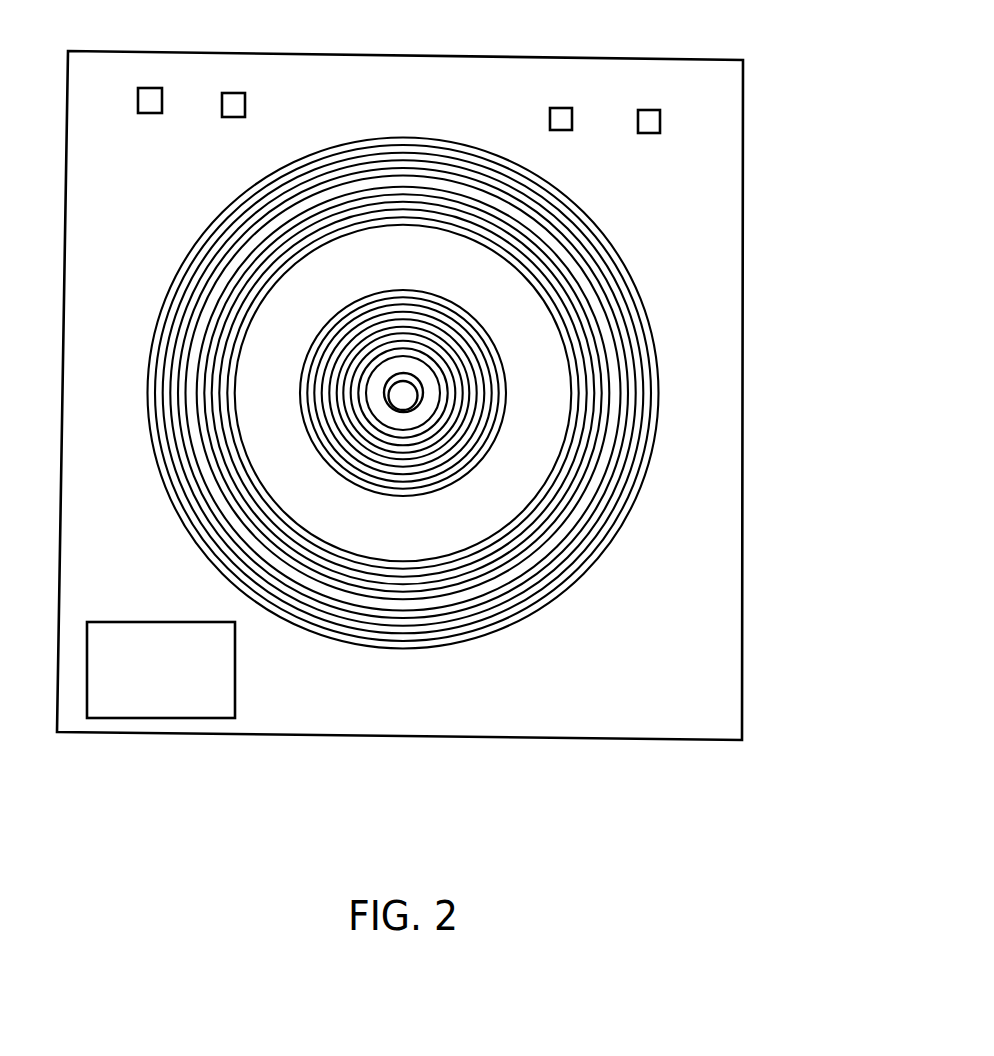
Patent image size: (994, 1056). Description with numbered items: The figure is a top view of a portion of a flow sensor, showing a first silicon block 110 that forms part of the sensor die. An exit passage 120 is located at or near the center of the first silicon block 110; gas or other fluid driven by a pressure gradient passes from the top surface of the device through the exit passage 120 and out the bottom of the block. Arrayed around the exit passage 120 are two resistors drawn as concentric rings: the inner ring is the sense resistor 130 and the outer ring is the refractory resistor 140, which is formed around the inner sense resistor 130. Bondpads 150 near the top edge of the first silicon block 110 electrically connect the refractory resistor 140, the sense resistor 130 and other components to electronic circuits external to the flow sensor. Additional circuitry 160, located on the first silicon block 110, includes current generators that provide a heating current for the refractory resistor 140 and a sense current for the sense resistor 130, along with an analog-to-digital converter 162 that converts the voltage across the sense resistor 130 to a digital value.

The first silicon block 110 is at (683, 372).
The exit passage 120 is at (402, 408).
The sense resistor 130 is at (485, 357).
The refractory resistor 140 is at (615, 475).
The bondpads 150 is at (648, 115).
The additional circuitry 160 is at (141, 722).
The analog-to-digital converter 162 is at (138, 717).